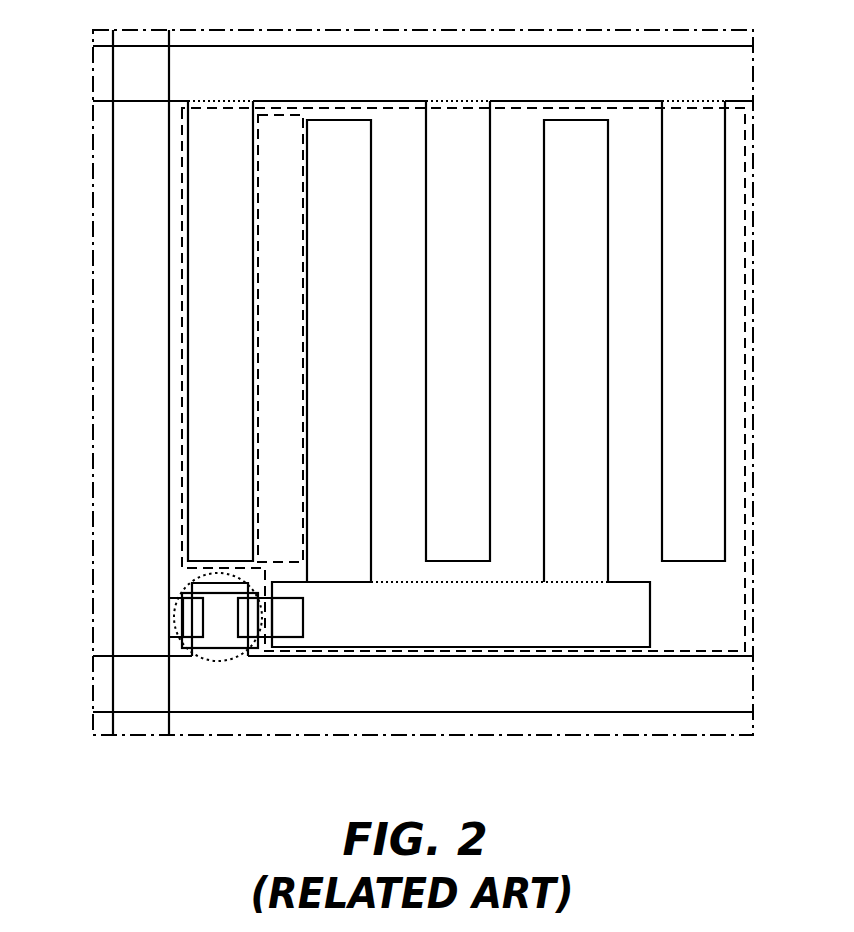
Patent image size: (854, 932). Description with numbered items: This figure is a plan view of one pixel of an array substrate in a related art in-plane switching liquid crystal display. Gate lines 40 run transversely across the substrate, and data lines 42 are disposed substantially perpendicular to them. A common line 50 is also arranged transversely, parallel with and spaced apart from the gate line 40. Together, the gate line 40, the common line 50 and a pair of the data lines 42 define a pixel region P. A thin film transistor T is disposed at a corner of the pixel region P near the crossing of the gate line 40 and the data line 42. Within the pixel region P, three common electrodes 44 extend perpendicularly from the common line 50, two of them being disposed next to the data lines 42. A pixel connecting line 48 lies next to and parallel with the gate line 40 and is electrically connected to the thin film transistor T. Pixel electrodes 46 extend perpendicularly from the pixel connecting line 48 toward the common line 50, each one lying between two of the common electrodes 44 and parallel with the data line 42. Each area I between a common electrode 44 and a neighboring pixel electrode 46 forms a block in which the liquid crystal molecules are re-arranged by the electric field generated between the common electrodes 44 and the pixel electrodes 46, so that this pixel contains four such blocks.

The gate line 40 is at (755, 656).
The data line 42 is at (169, 738).
The common electrode 44 is at (232, 176).
The pixel electrode 46 is at (352, 250).
The pixel connecting line 48 is at (642, 618).
The common line 50 is at (755, 46).
The thin film transistor T is at (218, 662).
The pixel region P is at (175, 367).
The area between common electrode and pixel electrode I is at (250, 263).